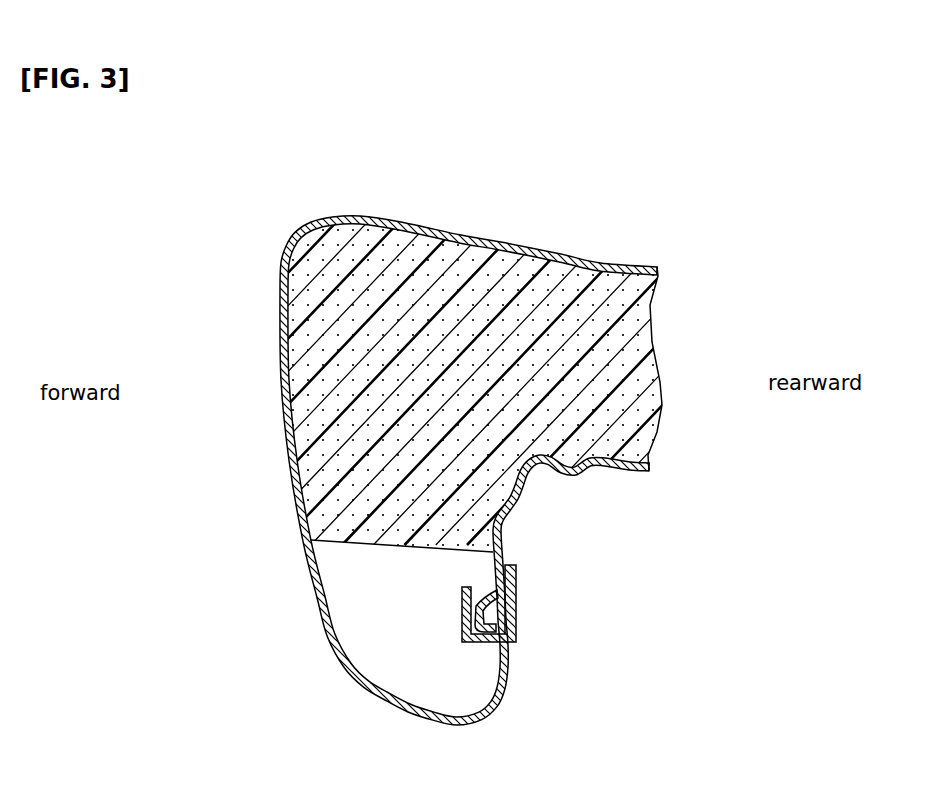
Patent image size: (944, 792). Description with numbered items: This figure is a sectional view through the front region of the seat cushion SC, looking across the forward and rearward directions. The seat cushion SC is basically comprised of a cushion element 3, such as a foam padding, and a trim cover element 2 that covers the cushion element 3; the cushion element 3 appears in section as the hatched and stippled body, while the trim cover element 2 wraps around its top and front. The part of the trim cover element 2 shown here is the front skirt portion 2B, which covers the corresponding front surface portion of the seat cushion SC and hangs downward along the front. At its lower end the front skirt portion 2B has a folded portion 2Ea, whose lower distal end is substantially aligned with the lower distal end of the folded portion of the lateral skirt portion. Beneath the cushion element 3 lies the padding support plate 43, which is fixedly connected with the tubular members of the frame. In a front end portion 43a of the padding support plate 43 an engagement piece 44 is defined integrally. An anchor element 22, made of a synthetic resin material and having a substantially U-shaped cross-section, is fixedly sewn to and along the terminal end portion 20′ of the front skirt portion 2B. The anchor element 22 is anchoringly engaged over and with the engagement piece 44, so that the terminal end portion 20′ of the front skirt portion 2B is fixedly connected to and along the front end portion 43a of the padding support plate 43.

The trim cover element 2 is at (282, 272).
The front skirt portion 2B is at (282, 368).
The folded portion 2Ea is at (318, 592).
The cushion element 3 is at (590, 365).
The padding support plate 43 is at (612, 470).
The front end portion 43a is at (493, 571).
The engagement piece 44 is at (480, 605).
The terminal end portion 20′ is at (517, 597).
The anchor element 22 is at (480, 644).
The seat cushion SC is at (488, 228).